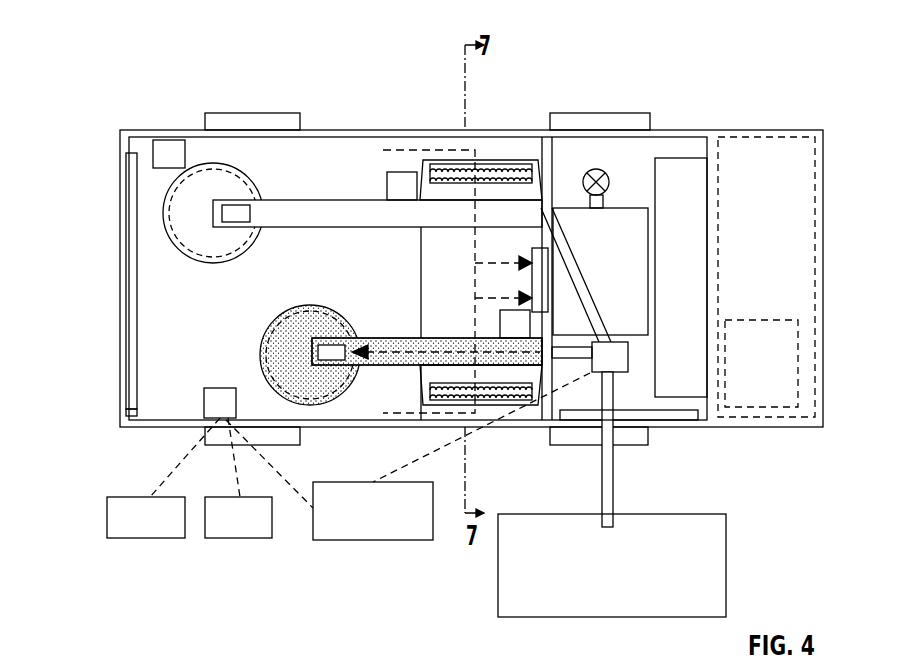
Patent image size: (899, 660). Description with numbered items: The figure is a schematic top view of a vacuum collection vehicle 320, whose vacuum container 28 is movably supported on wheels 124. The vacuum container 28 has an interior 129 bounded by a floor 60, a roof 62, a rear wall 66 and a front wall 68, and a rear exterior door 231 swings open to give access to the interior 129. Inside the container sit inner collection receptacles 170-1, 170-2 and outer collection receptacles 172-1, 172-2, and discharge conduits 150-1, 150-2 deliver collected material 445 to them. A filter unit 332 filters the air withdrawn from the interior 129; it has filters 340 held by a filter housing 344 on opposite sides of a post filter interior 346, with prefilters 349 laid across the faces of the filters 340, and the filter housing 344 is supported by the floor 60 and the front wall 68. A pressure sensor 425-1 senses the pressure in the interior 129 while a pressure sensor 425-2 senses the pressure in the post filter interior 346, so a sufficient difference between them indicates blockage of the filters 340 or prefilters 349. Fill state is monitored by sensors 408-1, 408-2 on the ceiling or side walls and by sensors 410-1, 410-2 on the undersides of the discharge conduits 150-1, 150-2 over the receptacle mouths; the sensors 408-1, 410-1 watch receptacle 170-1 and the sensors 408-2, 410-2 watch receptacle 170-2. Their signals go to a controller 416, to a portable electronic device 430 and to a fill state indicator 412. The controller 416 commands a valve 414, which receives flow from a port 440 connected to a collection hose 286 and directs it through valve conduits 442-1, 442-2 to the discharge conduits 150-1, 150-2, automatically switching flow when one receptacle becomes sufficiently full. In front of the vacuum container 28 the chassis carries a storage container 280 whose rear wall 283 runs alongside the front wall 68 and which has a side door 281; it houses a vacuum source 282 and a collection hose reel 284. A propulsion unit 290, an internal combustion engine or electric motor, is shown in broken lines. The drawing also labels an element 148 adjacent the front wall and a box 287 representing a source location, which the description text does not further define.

The vacuum collection vehicle 320 is at (56, 181).
The wheels 124 is at (215, 113).
The outer collection receptacle 172-2 is at (165, 195).
The sensor 408-2 is at (153, 152).
The sensor 410-2 is at (233, 205).
The discharge conduit 150-2 is at (307, 200).
The roof 62 is at (278, 137).
The vacuum container 28 is at (383, 135).
The filter unit 332 is at (423, 142).
The prefilters 349 is at (443, 160).
The filters 340 is at (497, 167).
The front wall 68 is at (542, 150).
The rear wall 283 is at (553, 170).
The valve conduit 442-2 is at (562, 208).
The vacuum source 282 is at (628, 208).
The storage container 280 is at (688, 137).
The rear exterior door 231 is at (126, 284).
The interior 129 is at (148, 337).
The inner collection receptacle 170-2 is at (198, 262).
The outer collection receptacle 172-1 is at (270, 320).
The inner collection receptacle 170-1 is at (262, 356).
The floor 60 is at (158, 412).
The rear wall 66 is at (124, 412).
The sensor 408-1 is at (205, 405).
The sensor 410-1 is at (330, 362).
The post filter interior 346 is at (421, 250).
The filter housing 344 is at (421, 278).
The pressure sensor 425-1 is at (387, 185).
The pressure sensor 425-2 is at (500, 325).
The air inlet 148 is at (532, 255).
The collected material 445 is at (400, 353).
The discharge conduit 150-1 is at (378, 365).
The propulsion unit 290 is at (815, 325).
The valve 414 is at (628, 357).
The port 440 is at (613, 372).
The collection hose reel 284 is at (683, 400).
The side door 281 is at (550, 420).
The valve conduit 442-1 is at (570, 360).
The collection hose 286 is at (614, 490).
The source location 287 is at (657, 617).
The portable electronic device 430 is at (138, 540).
The fill state indicator 412 is at (228, 540).
The controller 416 is at (372, 540).